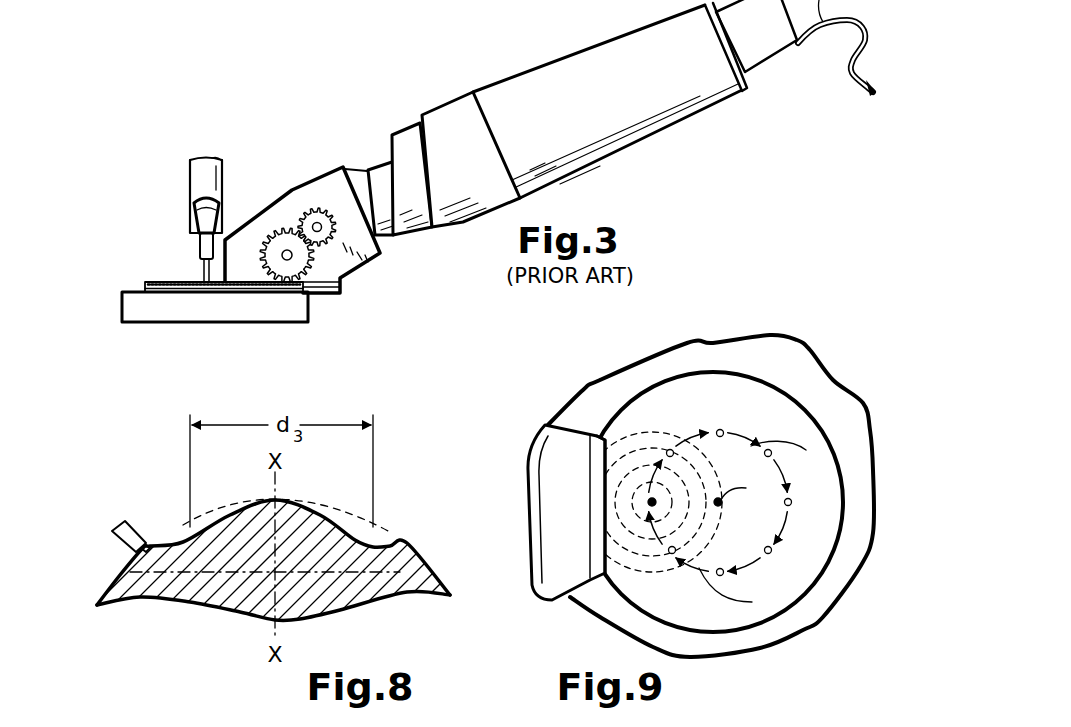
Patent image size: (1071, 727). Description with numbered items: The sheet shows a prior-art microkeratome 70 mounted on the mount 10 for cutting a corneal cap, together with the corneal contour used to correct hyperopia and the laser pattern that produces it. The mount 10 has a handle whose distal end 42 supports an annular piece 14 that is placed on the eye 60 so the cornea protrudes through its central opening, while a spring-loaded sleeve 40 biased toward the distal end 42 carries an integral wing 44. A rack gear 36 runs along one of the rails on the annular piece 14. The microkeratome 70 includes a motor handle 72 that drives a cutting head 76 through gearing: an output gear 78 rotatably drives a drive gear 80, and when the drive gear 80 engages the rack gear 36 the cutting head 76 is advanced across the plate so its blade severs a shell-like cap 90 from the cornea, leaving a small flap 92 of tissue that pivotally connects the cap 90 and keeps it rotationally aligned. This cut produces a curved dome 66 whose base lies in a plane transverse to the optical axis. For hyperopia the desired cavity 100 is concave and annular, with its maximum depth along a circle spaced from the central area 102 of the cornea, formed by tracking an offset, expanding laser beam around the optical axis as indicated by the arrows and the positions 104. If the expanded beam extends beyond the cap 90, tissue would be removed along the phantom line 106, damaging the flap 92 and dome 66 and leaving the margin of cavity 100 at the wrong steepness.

In FIG. 3, the mount 10 is at (132, 266).
In FIG. 3, the annular piece 14 is at (197, 326).
In FIG. 3, the rack gear 36 is at (175, 281).
In FIG. 3, the sleeve 40 is at (220, 170).
In FIG. 3, the distal end 42 is at (200, 268).
In FIG. 3, the wing 44 is at (212, 208).
In FIG. 9, the eye 60 is at (630, 385).
In FIG. 8, the curved dome 66 is at (183, 525).
In FIG. 9, the curved dome 66 is at (747, 387).
In FIG. 3, the microkeratome 70 is at (556, 30).
In FIG. 3, the motor handle 72 is at (565, 142).
In FIG. 3, the cutting head 76 is at (382, 258).
In FIG. 3, the output gear 78 is at (316, 210).
In FIG. 3, the drive gear 80 is at (300, 263).
In FIG. 8, the cap 90 is at (136, 539).
In FIG. 9, the cap 90 is at (562, 542).
In FIG. 8, the flap 92 is at (150, 545).
In FIG. 9, the flap 92 is at (600, 445).
In FIG. 8, the cavity 100 is at (372, 540).
In FIG. 8, the central area 102 is at (323, 537).
In FIG. 9, the measurement positions 104 is at (720, 429).
In FIG. 8, the line 106 is at (130, 585).